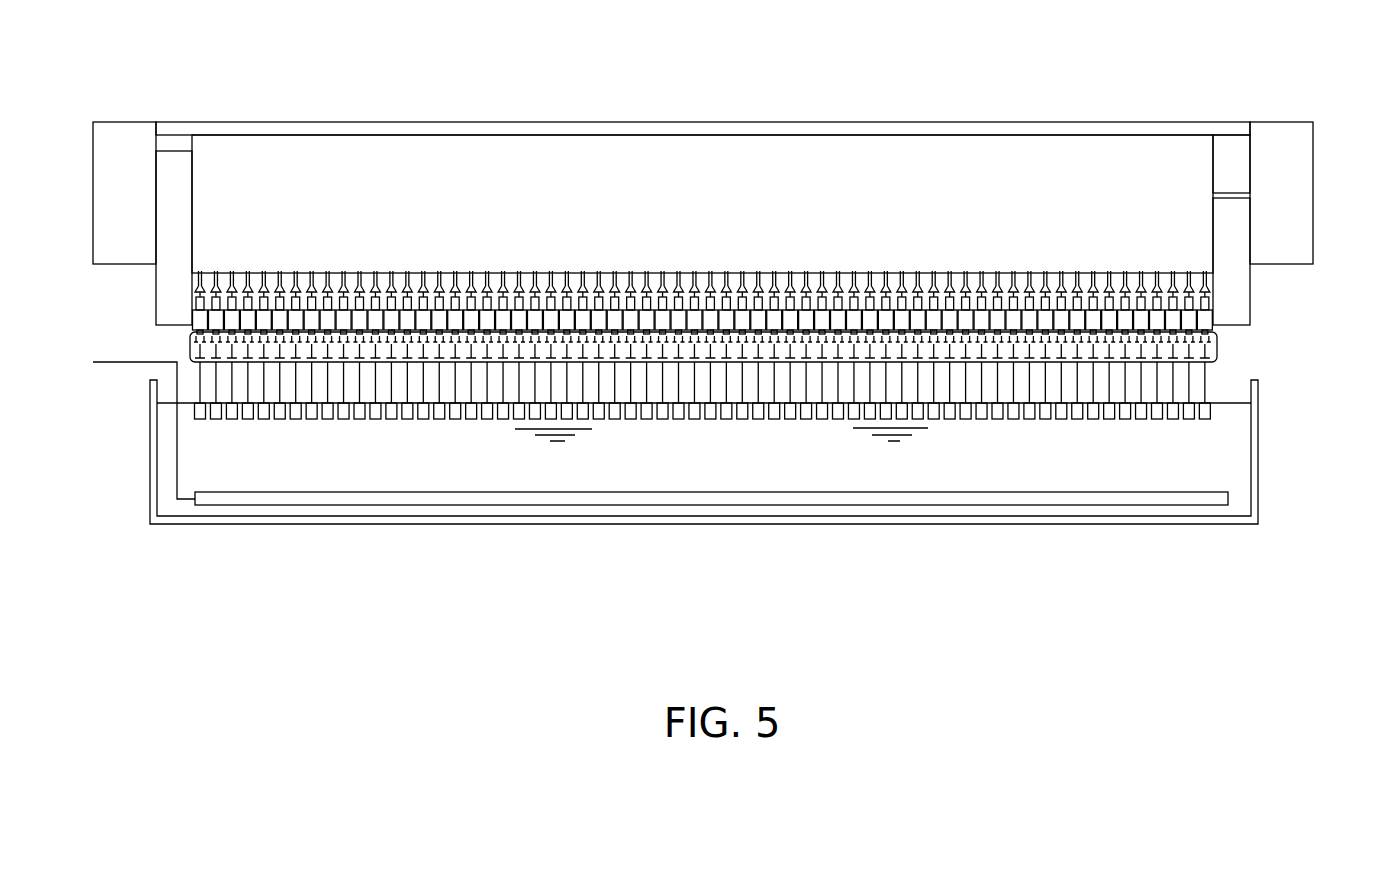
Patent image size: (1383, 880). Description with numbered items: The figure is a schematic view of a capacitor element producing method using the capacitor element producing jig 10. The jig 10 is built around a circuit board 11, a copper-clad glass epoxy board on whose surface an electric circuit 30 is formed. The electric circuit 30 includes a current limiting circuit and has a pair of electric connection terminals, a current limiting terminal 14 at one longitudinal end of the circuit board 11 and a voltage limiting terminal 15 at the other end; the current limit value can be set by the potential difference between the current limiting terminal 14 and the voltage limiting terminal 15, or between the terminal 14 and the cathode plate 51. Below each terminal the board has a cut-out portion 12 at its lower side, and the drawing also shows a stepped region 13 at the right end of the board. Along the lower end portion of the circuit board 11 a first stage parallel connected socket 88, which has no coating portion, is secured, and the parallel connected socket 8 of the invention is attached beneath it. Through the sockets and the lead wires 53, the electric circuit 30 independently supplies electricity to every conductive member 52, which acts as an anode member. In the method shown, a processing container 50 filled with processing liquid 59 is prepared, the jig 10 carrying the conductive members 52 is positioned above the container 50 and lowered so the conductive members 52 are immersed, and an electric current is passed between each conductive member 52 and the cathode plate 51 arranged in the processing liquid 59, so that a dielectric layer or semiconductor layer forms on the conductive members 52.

The capacitor element producing jig 10 is at (704, 217).
The circuit board 11 is at (591, 127).
The cut-out portion 12 is at (137, 280).
The right side wall 13 is at (1276, 283).
The current limiting terminal 14 is at (108, 217).
The voltage limiting terminal 15 is at (1295, 205).
The electric circuit 30 is at (697, 182).
The parallel connected socket 88 is at (1191, 319).
The parallel connected socket 8 is at (1193, 347).
The processing container 50 is at (756, 524).
The cathode plate 51 is at (572, 499).
The conductive member 52 is at (439, 416).
The lead wire 53 is at (312, 384).
The processing liquid 59 is at (905, 475).